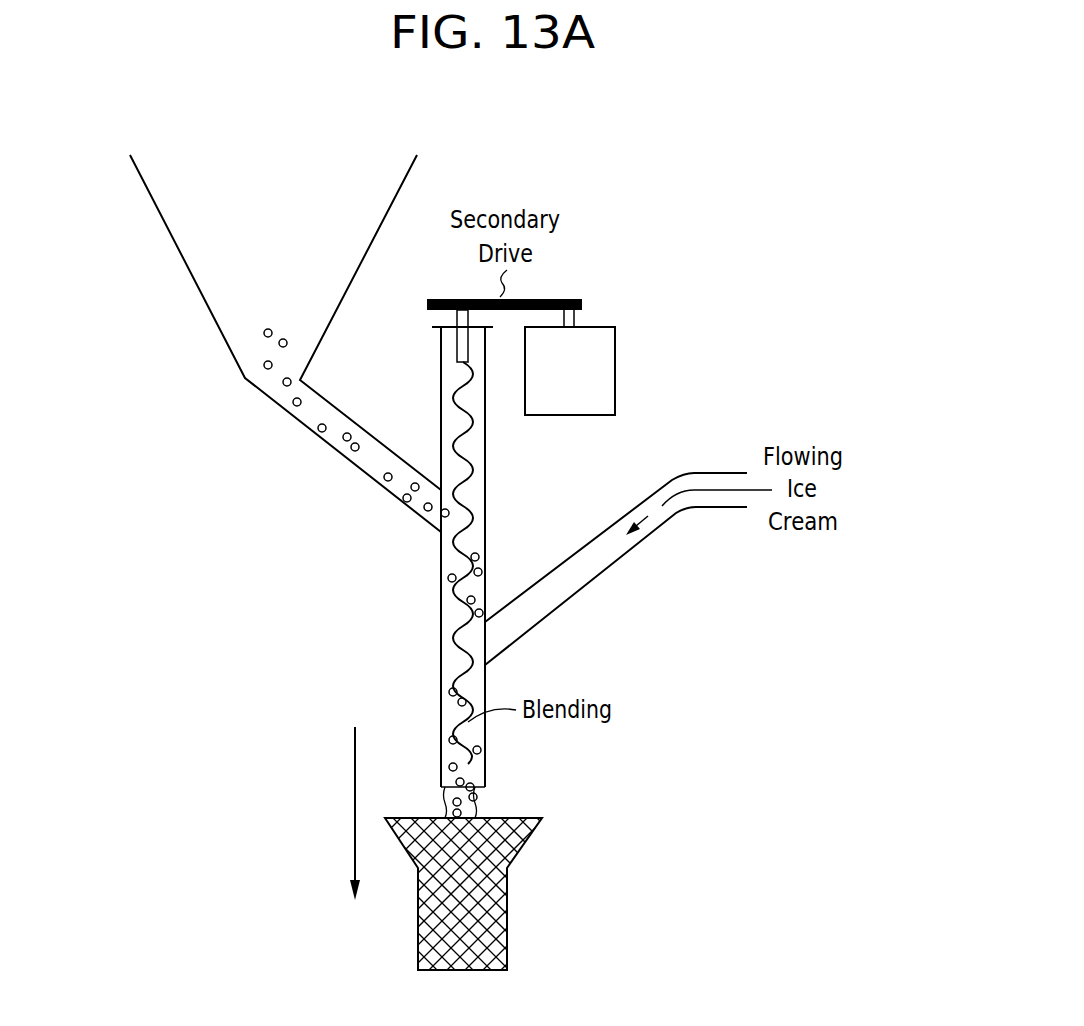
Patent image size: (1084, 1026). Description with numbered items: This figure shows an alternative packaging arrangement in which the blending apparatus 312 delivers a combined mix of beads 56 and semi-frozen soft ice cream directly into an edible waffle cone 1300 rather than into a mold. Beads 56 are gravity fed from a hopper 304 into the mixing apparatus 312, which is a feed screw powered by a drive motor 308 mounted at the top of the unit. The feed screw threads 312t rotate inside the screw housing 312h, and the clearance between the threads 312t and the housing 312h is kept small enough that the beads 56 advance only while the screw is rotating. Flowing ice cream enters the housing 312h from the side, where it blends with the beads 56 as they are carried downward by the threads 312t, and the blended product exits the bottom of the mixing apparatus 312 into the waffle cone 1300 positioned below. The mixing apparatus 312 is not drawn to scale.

The hopper 304 is at (279, 170).
The beads 56 is at (284, 338).
The mixing apparatus 312 is at (458, 548).
The threads of the feed screw 312t is at (472, 462).
The auger housing 312h is at (486, 516).
The drive motor 308 is at (615, 353).
The edible waffle cone 1300 is at (552, 851).